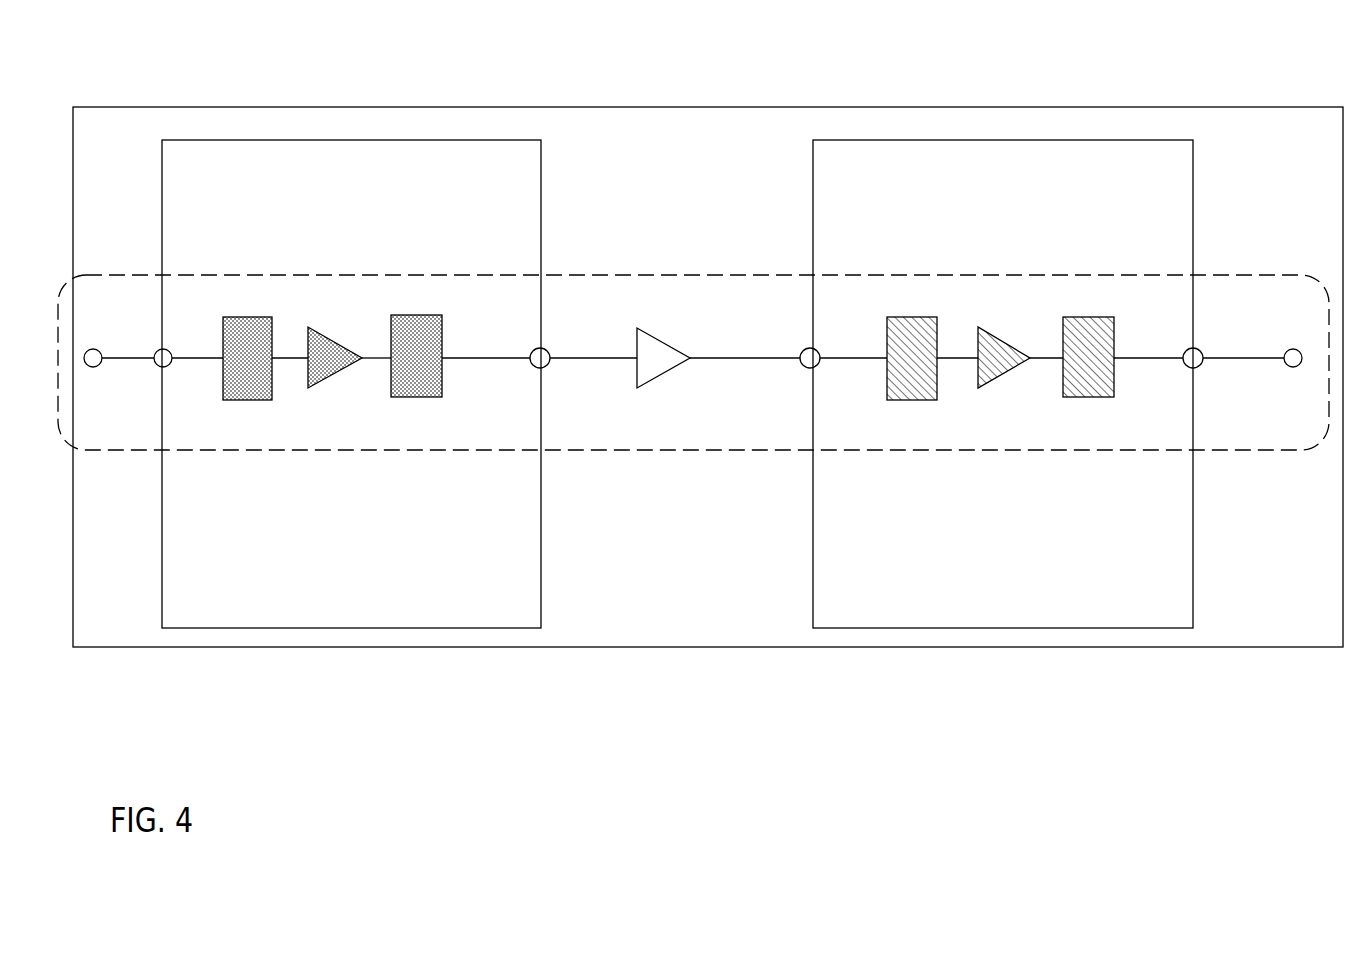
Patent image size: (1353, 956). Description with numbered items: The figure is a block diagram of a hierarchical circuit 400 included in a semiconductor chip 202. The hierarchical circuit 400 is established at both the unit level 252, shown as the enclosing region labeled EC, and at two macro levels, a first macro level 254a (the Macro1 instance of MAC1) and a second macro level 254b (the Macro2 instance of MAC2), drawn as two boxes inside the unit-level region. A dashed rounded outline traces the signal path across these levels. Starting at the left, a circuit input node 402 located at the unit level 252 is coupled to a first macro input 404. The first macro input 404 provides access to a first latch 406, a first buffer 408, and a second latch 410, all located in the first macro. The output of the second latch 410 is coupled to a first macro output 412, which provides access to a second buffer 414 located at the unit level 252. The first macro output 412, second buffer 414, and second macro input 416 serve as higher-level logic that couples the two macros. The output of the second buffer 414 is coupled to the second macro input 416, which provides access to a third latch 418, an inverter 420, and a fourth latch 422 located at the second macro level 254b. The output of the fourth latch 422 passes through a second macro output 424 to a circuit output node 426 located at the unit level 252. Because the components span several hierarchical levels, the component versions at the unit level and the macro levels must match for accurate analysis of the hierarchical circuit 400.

The semiconductor chip 202 is at (128, 106).
The unit level 252 is at (693, 149).
The first macro level 254a is at (356, 504).
The second macro level 254b is at (1027, 519).
The hierarchical circuit 400 is at (607, 272).
The circuit input node 402 is at (94, 368).
The first macro input 404 is at (160, 349).
The first latch 406 is at (252, 332).
The first buffer 408 is at (327, 332).
The second latch 410 is at (420, 323).
The first macro output 412 is at (537, 348).
The second buffer 414 is at (653, 333).
The second macro input 416 is at (807, 349).
The third latch 418 is at (912, 335).
The inverter 420 is at (993, 338).
The fourth latch 422 is at (1095, 322).
The second macro output 424 is at (1190, 346).
The circuit output node 426 is at (1295, 368).